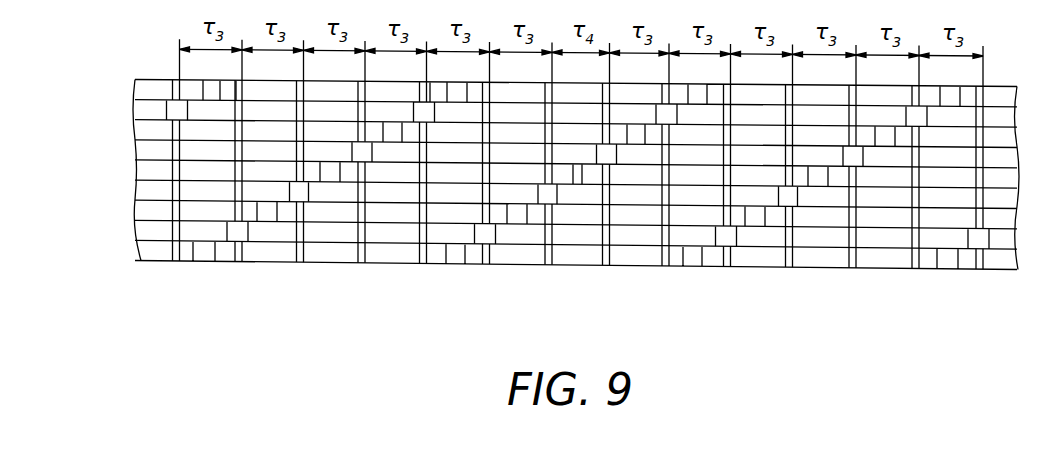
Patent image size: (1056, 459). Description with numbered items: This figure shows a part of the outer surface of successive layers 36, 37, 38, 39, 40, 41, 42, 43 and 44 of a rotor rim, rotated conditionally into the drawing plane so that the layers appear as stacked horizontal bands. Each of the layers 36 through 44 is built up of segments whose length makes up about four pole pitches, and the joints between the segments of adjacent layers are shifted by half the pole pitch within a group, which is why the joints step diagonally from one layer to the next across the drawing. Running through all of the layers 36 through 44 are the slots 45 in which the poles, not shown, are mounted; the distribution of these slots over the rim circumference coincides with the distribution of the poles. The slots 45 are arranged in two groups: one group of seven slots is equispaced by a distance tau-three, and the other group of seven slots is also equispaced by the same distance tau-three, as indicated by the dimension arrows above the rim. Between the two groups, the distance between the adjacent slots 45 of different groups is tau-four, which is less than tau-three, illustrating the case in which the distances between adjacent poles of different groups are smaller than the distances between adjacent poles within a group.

The rim layer 36 is at (130, 248).
The rim layer 37 is at (128, 226).
The rim layer 38 is at (128, 208).
The rim layer 39 is at (127, 185).
The rim layer 40 is at (127, 165).
The rim layer 41 is at (125, 145).
The rim layer 42 is at (122, 124).
The rim layer 43 is at (127, 104).
The rim layer 44 is at (127, 88).
The slot 45 is at (983, 278).